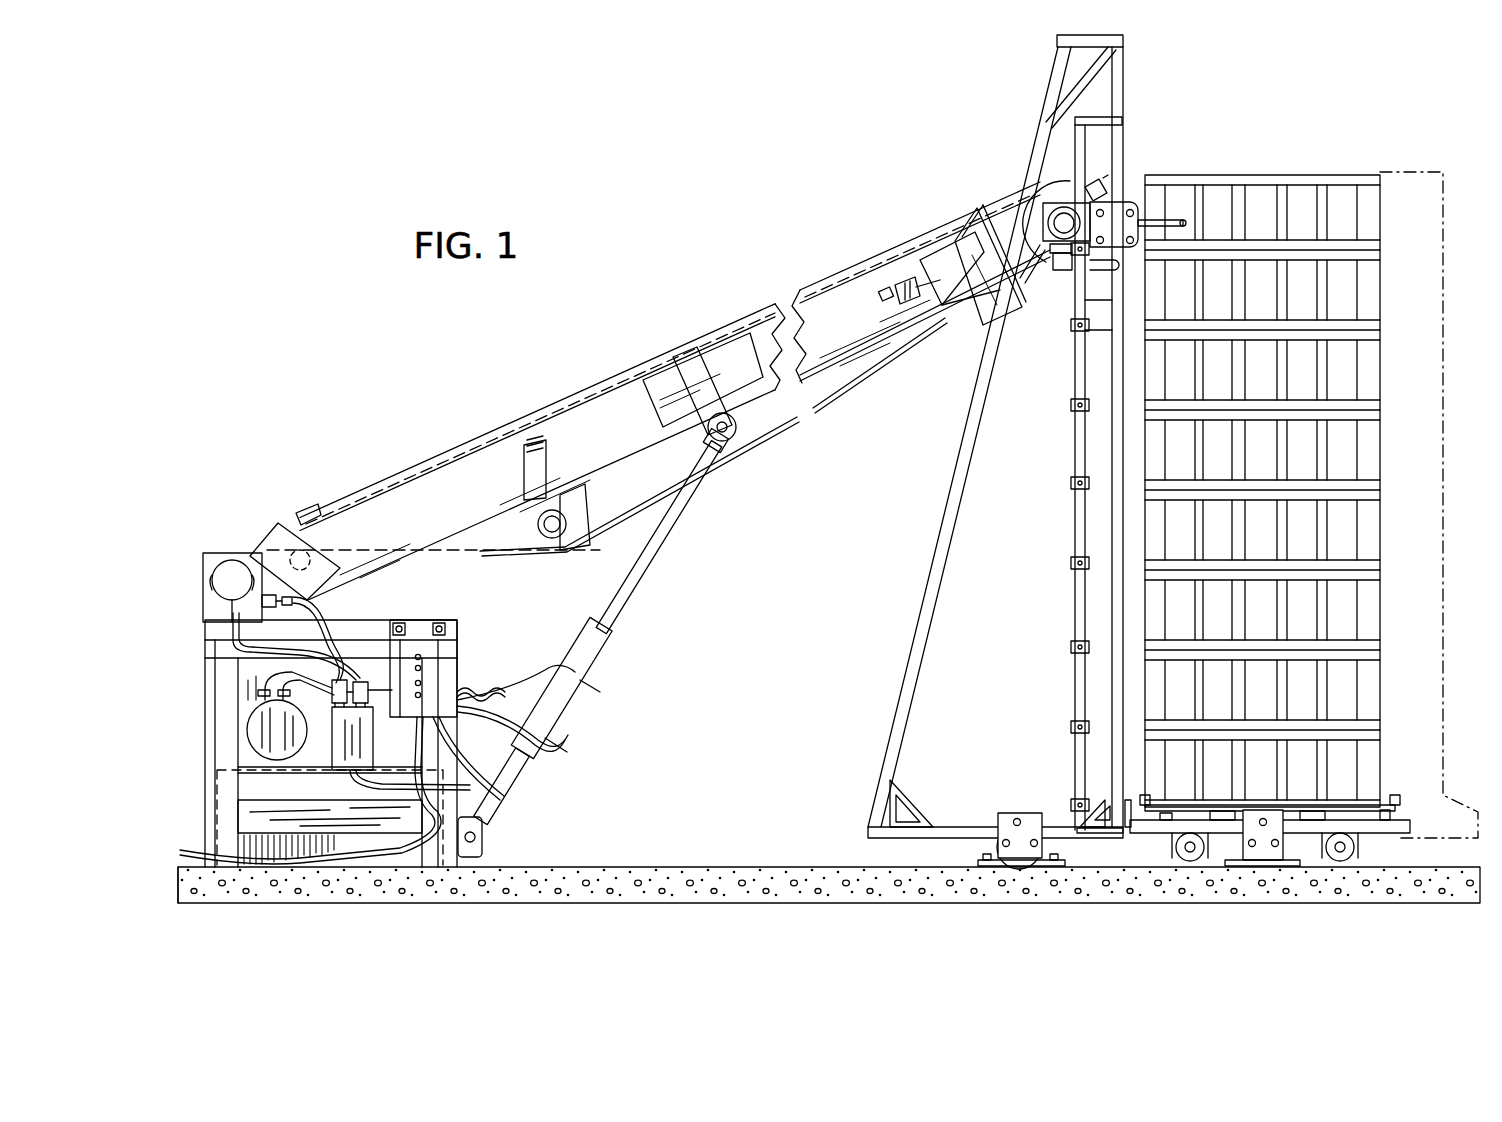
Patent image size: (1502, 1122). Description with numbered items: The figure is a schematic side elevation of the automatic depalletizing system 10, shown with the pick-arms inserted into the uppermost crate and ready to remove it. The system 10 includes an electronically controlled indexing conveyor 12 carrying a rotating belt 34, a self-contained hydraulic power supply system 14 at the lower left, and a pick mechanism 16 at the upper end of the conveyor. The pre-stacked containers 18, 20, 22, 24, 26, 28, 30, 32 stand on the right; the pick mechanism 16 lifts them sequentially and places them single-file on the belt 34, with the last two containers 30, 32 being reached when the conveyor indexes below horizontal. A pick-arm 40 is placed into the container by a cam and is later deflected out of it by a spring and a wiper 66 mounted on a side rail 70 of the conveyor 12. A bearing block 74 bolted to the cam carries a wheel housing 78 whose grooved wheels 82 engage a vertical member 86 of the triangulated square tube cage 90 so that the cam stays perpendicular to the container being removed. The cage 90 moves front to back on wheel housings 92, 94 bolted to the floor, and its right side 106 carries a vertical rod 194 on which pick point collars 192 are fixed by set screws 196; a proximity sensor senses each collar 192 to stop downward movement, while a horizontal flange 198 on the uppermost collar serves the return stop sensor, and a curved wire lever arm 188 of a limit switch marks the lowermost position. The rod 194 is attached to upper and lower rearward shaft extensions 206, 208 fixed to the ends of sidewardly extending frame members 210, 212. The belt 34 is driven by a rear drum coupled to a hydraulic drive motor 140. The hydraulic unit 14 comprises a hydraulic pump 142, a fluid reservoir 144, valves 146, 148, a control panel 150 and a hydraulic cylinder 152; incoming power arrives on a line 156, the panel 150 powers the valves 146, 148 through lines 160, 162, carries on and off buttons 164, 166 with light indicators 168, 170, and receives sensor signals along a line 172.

The automatic depalletizing system 10 is at (676, 204).
The indexing conveyor 12 is at (683, 336).
The hydraulic power supply system 14 is at (246, 700).
The pick mechanism 16 is at (1053, 200).
The container 18 is at (1379, 175).
The container 20 is at (1381, 278).
The container 22 is at (1381, 362).
The container 24 is at (1381, 436).
The container 26 is at (1381, 526).
The container 28 is at (1381, 612).
The container 30 is at (1381, 684).
The container 32 is at (1381, 764).
The rotating belt 34 is at (800, 420).
The pick-arm 40 is at (1182, 222).
The wiper 66 is at (976, 215).
The side rail 70 is at (962, 318).
The bearing block 74 is at (1062, 210).
The wheel housing 78 is at (1122, 210).
The grooved wheels 82 is at (1100, 200).
The vertical member 86 is at (1122, 60).
The triangulated square tube cage 90 is at (926, 563).
The wheel housing 92 is at (1004, 812).
The wheel housing 94 is at (1270, 860).
The right side of cage 106 is at (893, 696).
The hydraulic drive motor 140 is at (233, 560).
The hydraulic pump 142 is at (262, 732).
The fluid reservoir 144 is at (334, 770).
The valve 146 is at (346, 680).
The valve 148 is at (365, 682).
The control panel 150 is at (456, 662).
The hydraulic cylinder 152 is at (572, 668).
The power line 156 is at (212, 850).
The line 160 is at (505, 817).
The line 162 is at (368, 690).
The on button 164 is at (424, 690).
The off button 166 is at (455, 714).
The on light indicator 168 is at (421, 660).
The off light indicator 170 is at (516, 796).
The signal line 172 is at (478, 688).
The curved wire lever arm 188 is at (1059, 337).
The pick point collar 192 is at (1040, 594).
The vertical rod 194 is at (1075, 440).
The set screw 196 is at (1071, 411).
The horizontal flange 198 is at (1064, 310).
The upper rearward shaft extension 206 is at (1101, 104).
The lower rearward shaft extension 208 is at (1093, 838).
The sidewardly extending frame member 210 is at (1120, 120).
The sidewardly extending frame member 212 is at (1106, 810).